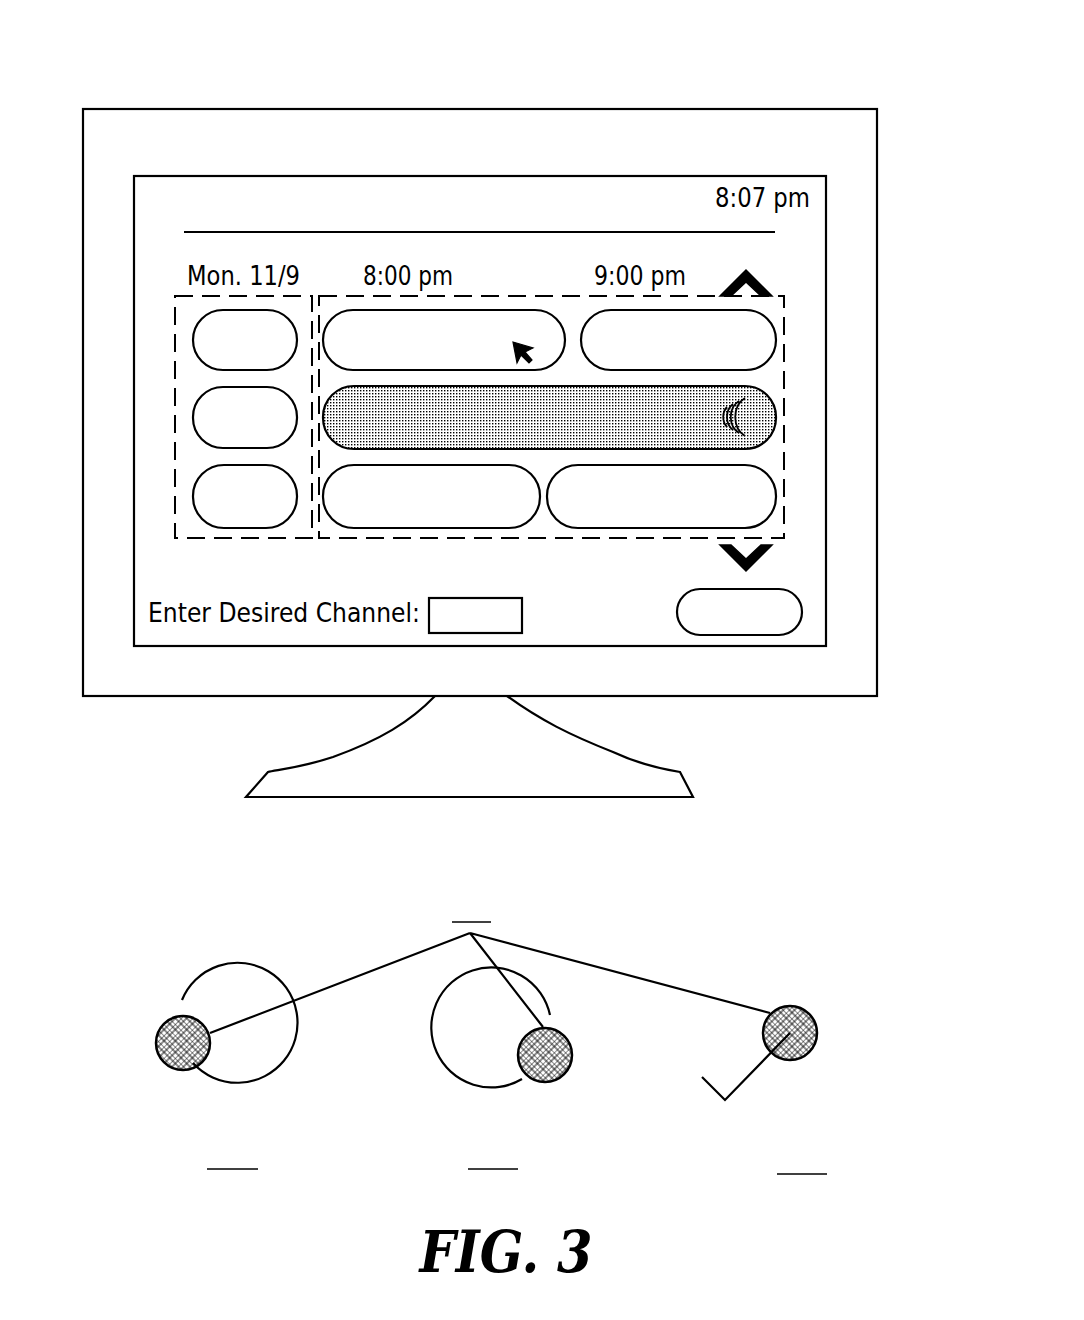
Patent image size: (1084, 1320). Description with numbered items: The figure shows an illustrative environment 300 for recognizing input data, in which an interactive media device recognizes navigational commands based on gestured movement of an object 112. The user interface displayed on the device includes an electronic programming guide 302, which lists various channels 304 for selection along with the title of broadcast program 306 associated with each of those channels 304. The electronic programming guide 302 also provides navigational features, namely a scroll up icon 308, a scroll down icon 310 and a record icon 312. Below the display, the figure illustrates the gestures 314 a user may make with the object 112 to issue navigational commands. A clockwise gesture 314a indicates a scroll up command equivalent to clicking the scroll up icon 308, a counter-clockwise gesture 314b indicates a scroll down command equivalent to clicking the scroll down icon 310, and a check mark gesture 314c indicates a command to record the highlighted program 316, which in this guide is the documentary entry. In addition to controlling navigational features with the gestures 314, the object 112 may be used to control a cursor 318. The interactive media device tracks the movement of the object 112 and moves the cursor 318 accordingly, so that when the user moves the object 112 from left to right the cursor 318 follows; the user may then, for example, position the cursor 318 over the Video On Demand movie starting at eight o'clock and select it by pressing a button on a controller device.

The environment 300 is at (181, 47).
The electronic programming guide 302 is at (440, 190).
The channels 304 is at (239, 297).
The title of broadcast program 306 is at (369, 297).
The scroll up icon 308 is at (760, 283).
The scroll down icon 310 is at (743, 552).
The record icon 312 is at (801, 608).
The gesture 314 is at (509, 1014).
The highlighted program 316 is at (740, 414).
The cursor 318 is at (520, 338).
The object 112 is at (490, 953).
The clockwise gesture 314a is at (227, 1066).
The counter-clockwise gesture 314b is at (492, 1068).
The check mark gesture 314c is at (782, 1090).